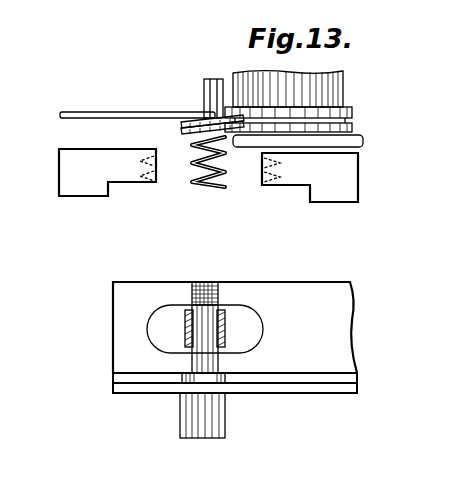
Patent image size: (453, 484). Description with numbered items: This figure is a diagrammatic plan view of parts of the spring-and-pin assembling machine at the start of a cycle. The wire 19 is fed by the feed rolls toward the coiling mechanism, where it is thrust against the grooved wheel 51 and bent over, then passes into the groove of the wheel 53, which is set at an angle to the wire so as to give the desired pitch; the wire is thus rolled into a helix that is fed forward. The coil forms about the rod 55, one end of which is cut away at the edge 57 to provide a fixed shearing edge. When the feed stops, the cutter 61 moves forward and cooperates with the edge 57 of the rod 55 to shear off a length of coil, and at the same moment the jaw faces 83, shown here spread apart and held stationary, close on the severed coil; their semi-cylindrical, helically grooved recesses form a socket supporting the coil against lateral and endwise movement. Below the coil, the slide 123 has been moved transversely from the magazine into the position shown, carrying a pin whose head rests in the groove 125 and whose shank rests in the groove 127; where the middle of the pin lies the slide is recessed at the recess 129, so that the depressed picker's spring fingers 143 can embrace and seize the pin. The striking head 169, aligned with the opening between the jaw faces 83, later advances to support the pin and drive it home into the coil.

The wire 19 is at (119, 115).
The wheel 51 is at (352, 117).
The wheel 53 is at (202, 119).
The rod 55 is at (212, 79).
The cut-away edge 57 is at (222, 150).
The cutter blade 61 is at (363, 140).
The jaw faces 83 is at (340, 177).
The slide 123 is at (340, 325).
The groove 125 is at (325, 383).
The groove 127 is at (215, 286).
The recess 129 is at (246, 337).
The spring fingers 143 is at (185, 318).
The striking head 169 is at (181, 416).